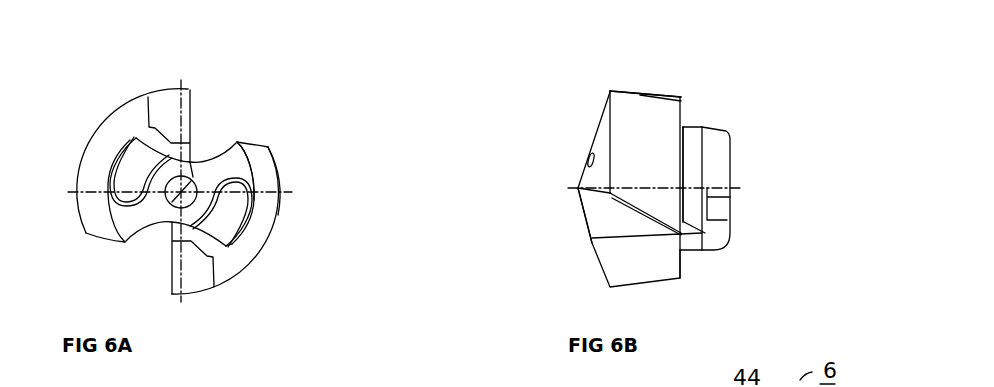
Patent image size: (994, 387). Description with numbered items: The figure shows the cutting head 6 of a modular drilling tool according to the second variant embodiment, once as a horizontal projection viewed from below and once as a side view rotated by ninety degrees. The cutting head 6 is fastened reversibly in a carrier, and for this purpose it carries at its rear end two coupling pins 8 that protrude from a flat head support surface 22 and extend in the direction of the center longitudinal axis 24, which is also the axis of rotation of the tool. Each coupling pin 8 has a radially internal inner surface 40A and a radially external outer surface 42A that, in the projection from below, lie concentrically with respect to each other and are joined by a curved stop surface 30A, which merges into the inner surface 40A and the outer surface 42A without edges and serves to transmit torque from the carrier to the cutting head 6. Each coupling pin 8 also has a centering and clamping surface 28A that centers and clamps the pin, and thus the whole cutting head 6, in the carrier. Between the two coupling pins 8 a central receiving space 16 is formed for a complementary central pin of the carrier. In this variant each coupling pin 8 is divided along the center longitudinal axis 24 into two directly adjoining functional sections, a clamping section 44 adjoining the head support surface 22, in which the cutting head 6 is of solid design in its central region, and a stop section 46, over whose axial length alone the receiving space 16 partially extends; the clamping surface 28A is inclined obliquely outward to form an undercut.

In FIG. 6A, the cutting head 6 is at (252, 295).
In FIG. 6B, the cutting head 6 is at (755, 75).
In FIG. 6A, the coupling pin 8 is at (233, 212).
In FIG. 6A, the central receiving space 16 is at (190, 161).
In FIG. 6A, the head support surface 22 is at (266, 175).
In FIG. 6B, the head support surface 22 is at (680, 101).
In FIG. 6B, the center longitudinal axis 24 is at (588, 198).
In FIG. 6A, the clamping surface 28A is at (250, 168).
In FIG. 6B, the clamping surface 28A is at (693, 207).
In FIG. 6A, the stop surface 30A is at (262, 213).
In FIG. 6A, the inner surface 40A is at (193, 177).
In FIG. 6A, the outer surface 42A is at (110, 166).
In FIG. 6B, the clamping section 44 is at (692, 140).
In FIG. 6B, the stop section 46 is at (715, 167).